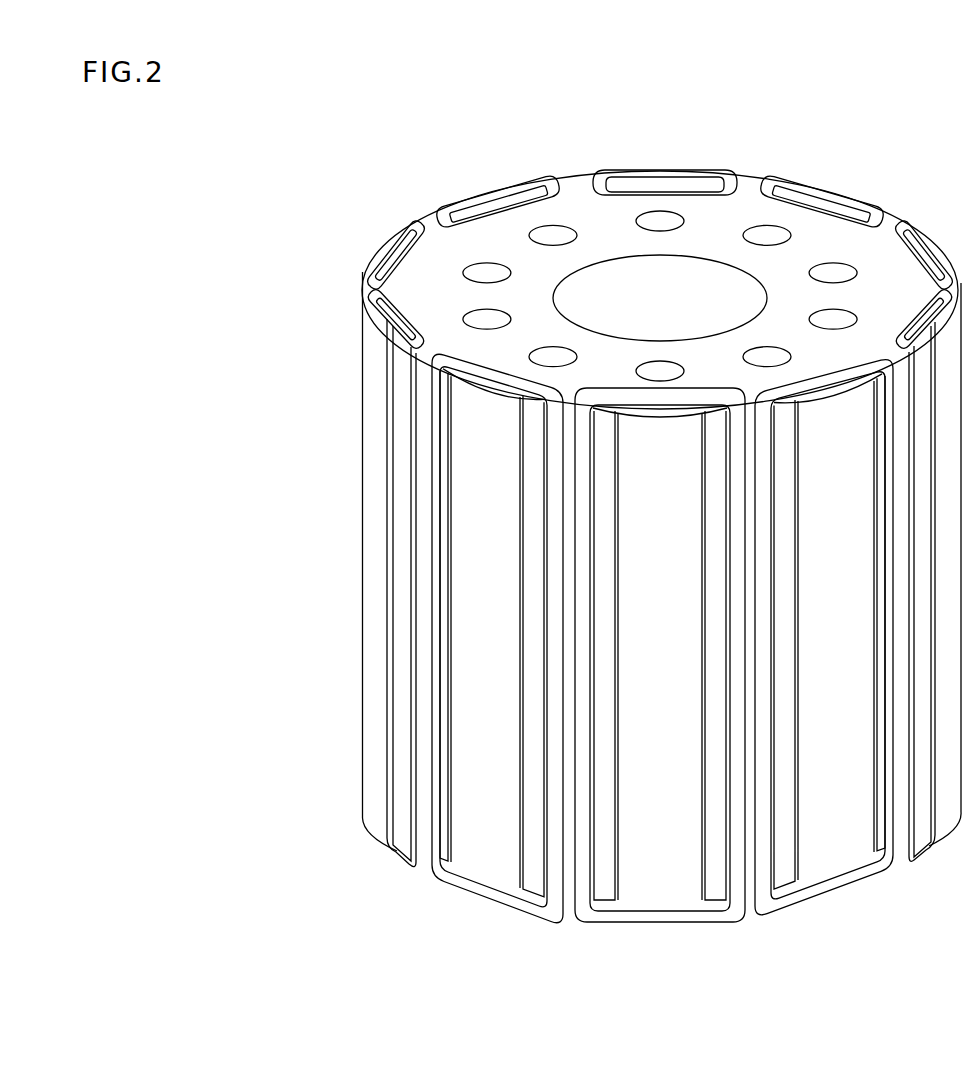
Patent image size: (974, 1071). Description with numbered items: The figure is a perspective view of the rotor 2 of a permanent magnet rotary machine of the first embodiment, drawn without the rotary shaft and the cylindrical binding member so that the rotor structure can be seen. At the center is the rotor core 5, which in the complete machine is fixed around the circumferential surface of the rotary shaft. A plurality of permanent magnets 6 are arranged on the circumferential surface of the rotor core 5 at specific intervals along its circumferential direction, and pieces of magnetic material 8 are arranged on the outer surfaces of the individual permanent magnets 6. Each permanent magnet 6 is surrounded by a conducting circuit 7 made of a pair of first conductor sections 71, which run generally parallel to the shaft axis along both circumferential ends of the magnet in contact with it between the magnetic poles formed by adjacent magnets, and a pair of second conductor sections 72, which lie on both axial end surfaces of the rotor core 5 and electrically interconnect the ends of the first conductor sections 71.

The rotor 2 is at (887, 162).
The rotor core 5 is at (423, 279).
The permanent magnet 6 is at (384, 325).
The conducting circuit 7 is at (258, 353).
The first conductor section 71 is at (432, 423).
The second conductor section 72 is at (428, 332).
The piece of magnetic material 8 is at (373, 650).